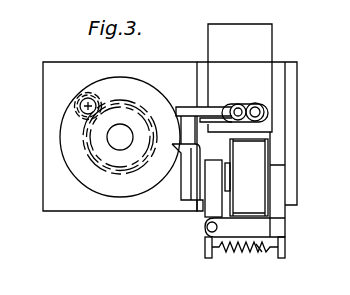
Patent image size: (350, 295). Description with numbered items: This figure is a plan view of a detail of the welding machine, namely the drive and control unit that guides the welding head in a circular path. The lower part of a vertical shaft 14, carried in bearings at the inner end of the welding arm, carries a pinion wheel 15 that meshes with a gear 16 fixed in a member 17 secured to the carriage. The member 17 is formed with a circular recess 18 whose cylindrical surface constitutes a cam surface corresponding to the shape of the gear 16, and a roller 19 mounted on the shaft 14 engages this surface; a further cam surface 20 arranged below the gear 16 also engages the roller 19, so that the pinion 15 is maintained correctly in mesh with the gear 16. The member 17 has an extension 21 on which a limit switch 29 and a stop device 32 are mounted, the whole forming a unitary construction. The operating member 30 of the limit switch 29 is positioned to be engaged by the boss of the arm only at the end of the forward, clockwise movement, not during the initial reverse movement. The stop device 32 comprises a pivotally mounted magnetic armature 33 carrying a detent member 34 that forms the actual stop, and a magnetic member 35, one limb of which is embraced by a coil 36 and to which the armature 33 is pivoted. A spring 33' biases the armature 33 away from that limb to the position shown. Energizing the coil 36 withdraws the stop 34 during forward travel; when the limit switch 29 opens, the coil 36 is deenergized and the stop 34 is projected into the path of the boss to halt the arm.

The vertical shaft 14 is at (80, 106).
The pinion wheel 15 is at (82, 101).
The gear 16 is at (155, 173).
The member 17 is at (46, 179).
The circular recess 18 is at (79, 181).
The roller 19 is at (89, 94).
The cam surface 20 is at (134, 102).
The extension 21 is at (293, 77).
The limit switch 29 is at (252, 65).
The operating member 30 is at (186, 108).
The stop device 32 is at (245, 272).
The magnetic armature 33 is at (202, 195).
The spring 33' is at (263, 258).
The detent member 34 is at (196, 174).
The magnetic member 35 is at (286, 222).
The coil 36 is at (236, 157).